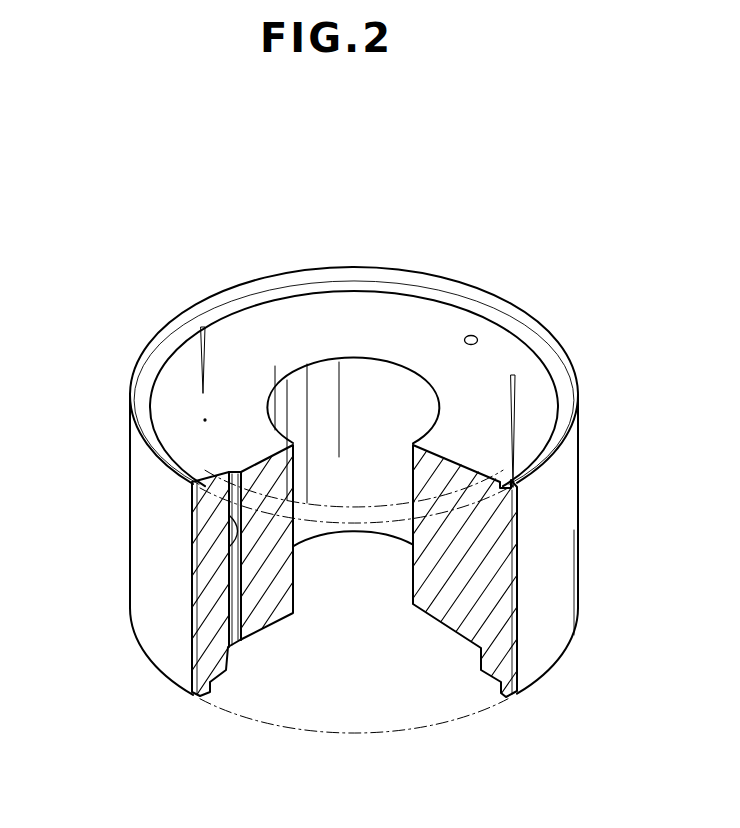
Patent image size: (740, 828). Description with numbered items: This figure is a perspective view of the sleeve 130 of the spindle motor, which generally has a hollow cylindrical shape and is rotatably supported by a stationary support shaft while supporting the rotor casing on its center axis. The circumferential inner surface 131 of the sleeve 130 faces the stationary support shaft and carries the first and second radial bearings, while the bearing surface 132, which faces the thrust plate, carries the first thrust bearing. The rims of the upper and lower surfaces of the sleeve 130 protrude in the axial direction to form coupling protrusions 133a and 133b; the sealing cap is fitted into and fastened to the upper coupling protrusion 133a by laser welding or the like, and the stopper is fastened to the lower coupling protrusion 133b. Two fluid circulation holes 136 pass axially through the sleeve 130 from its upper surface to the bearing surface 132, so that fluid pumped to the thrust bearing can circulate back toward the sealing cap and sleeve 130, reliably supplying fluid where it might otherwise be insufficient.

The sleeve 130 is at (151, 147).
The circumferential inner surface 131 is at (360, 380).
The bearing surface 132 is at (237, 325).
The upper coupling protrusion 133a is at (207, 686).
The lower coupling protrusion 133b is at (553, 347).
The fluid circulation holes 136 is at (470, 335).